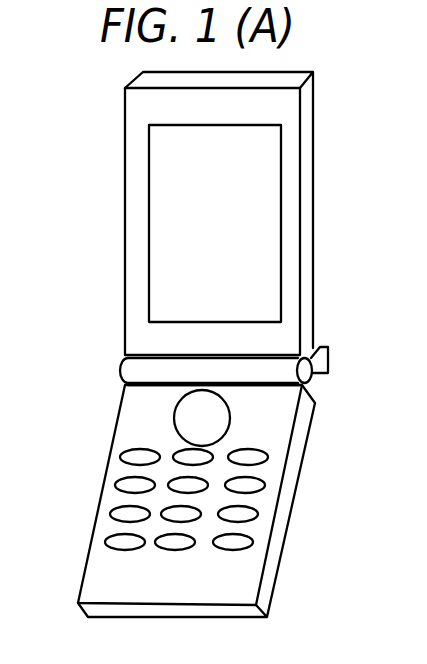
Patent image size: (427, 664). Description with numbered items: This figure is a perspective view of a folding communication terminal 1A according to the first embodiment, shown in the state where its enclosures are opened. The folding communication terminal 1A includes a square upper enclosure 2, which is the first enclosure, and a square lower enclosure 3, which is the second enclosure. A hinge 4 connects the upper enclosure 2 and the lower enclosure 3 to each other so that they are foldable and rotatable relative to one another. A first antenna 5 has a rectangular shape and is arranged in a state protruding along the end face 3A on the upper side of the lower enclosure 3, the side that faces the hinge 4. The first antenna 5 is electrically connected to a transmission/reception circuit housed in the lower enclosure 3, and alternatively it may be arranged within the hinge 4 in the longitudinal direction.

The folding communication terminal 1A is at (105, 96).
The upper enclosure 2 is at (309, 146).
The lower enclosure 3 is at (282, 534).
The end face 3A is at (261, 378).
The hinge 4 is at (133, 372).
The first antenna 5 is at (328, 355).